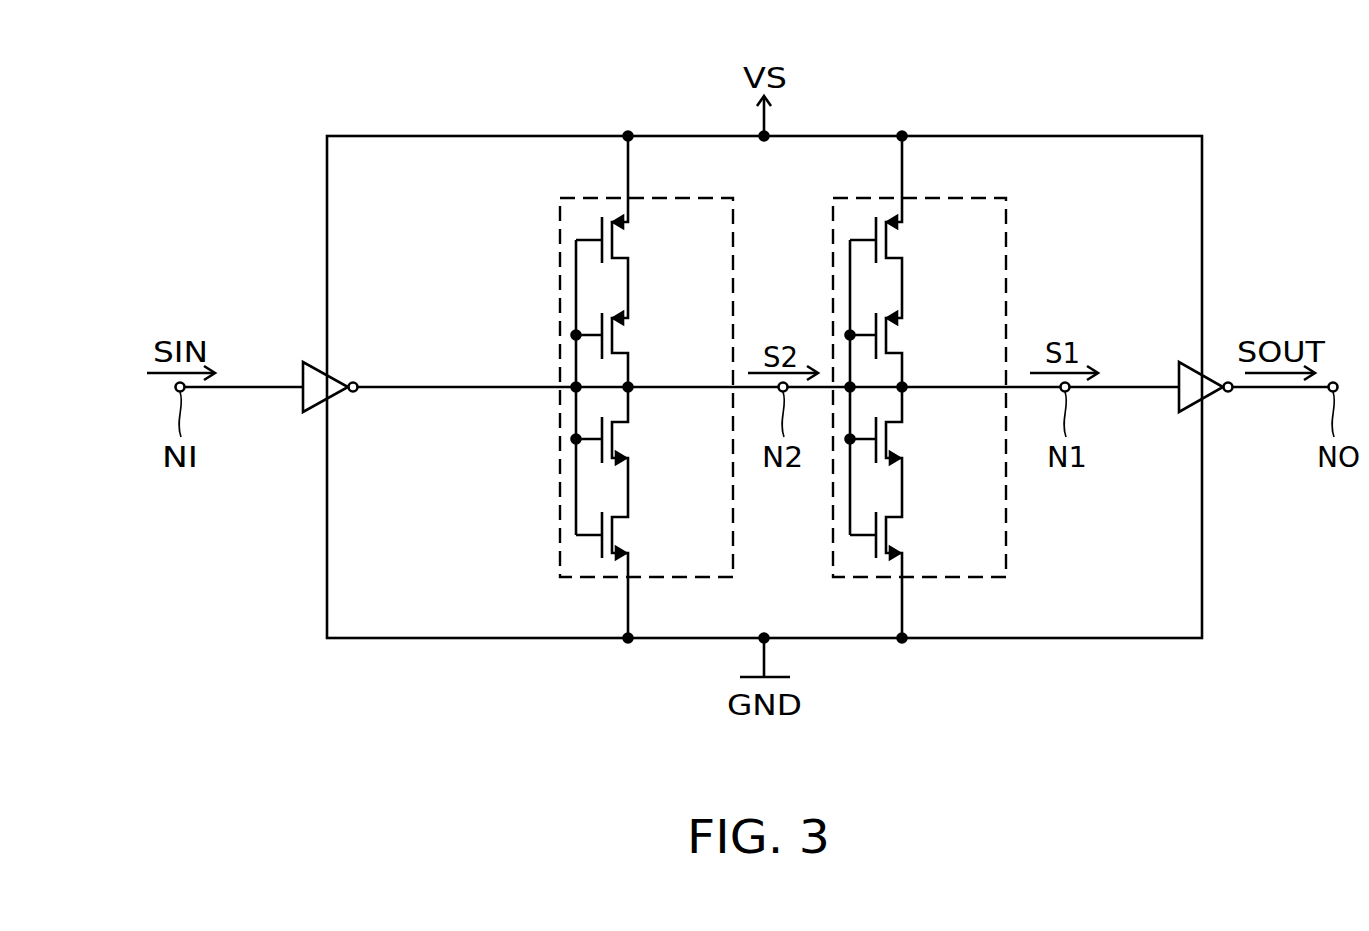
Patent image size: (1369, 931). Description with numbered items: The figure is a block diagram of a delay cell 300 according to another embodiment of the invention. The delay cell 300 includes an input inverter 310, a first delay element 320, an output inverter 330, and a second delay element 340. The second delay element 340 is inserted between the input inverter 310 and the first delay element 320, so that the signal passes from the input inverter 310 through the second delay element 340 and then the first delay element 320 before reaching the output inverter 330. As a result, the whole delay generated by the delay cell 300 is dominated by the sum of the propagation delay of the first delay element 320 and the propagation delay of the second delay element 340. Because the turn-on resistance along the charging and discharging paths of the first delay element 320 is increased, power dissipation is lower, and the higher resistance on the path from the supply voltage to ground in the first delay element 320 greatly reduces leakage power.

The delay cell 300 is at (1019, 747).
The input inverter 310 is at (306, 401).
The first delay element 320 is at (977, 197).
The output inverter 330 is at (1181, 401).
The second delay element 340 is at (704, 197).